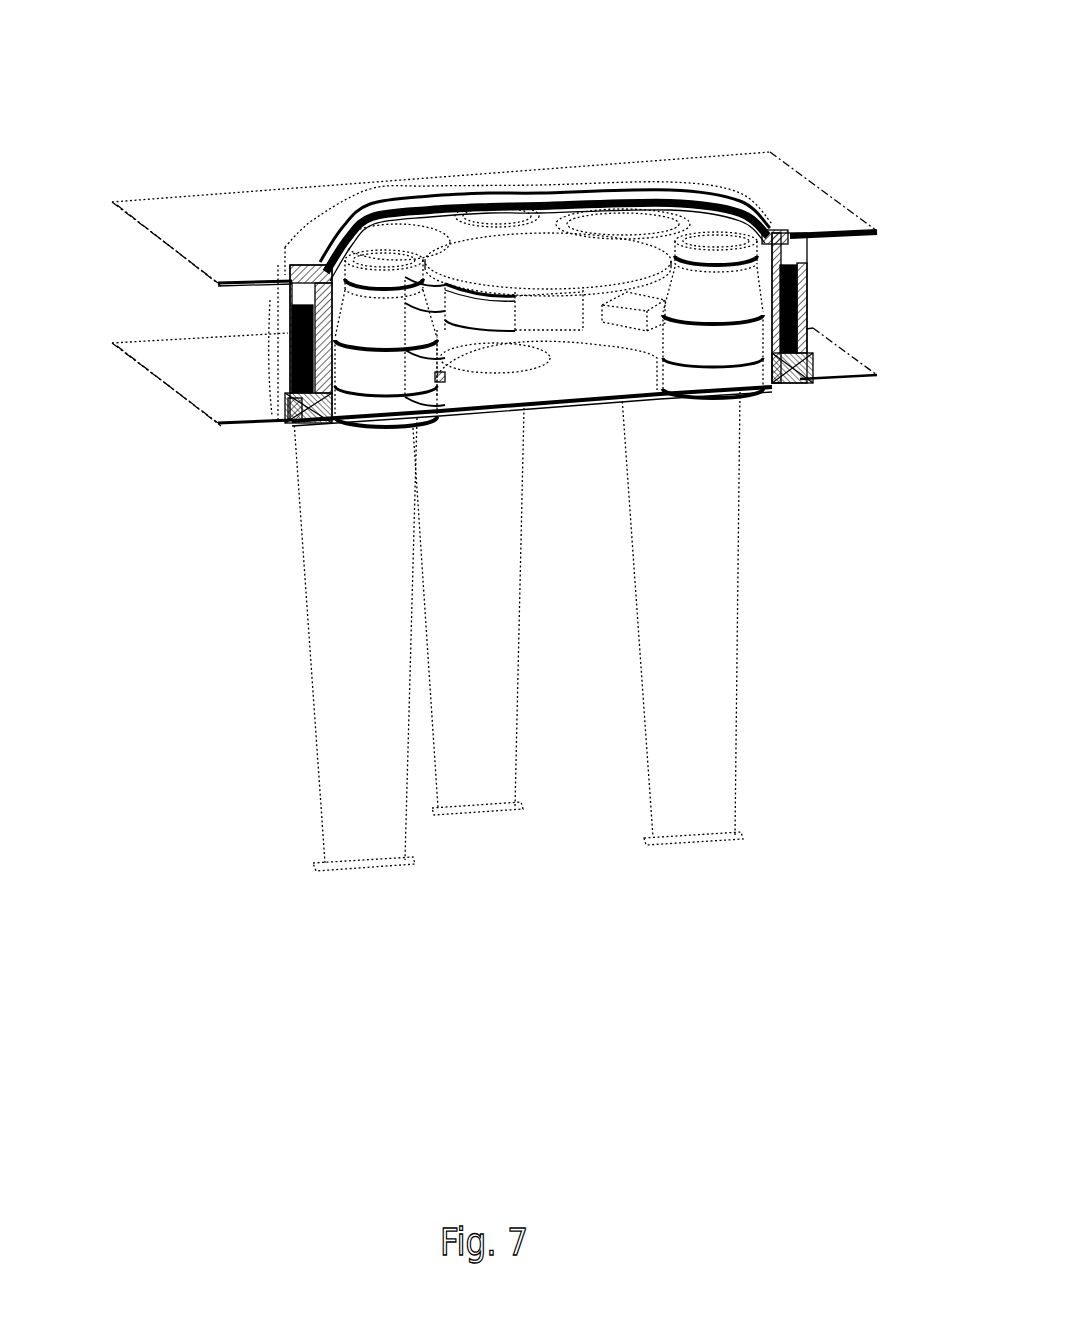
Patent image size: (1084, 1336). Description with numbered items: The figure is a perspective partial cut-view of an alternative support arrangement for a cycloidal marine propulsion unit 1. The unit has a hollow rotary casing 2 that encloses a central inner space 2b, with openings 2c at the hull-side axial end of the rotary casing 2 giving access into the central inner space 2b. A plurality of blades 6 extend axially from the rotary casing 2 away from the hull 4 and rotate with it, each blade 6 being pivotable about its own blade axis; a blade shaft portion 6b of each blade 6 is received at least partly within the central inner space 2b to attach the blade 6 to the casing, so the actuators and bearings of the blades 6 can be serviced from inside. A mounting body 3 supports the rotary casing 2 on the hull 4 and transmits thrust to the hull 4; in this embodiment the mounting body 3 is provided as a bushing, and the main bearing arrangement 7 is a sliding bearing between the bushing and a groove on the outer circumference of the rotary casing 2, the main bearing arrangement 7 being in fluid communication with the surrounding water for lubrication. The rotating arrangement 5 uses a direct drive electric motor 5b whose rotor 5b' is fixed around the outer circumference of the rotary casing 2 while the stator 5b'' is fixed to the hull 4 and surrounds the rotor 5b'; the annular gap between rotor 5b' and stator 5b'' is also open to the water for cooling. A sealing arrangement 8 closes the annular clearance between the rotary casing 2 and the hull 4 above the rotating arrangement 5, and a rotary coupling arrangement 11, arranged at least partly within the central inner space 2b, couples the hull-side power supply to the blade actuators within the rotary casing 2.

The cycloidal marine propulsion unit 1 is at (835, 918).
The rotary casing 2 is at (459, 315).
The central inner space 2b is at (612, 370).
The opening 2c is at (388, 242).
The mounting body 3 is at (797, 382).
The hull 4 is at (178, 388).
The rotating arrangement 5 is at (232, 344).
The direct drive electric motor 5b is at (302, 349).
The rotor 5b' is at (853, 290).
The stator 5b'' is at (861, 330).
The blades 6 is at (382, 832).
The blade shaft portion 6b is at (403, 334).
The main bearing arrangement 7 is at (310, 408).
The sealing arrangement 8 is at (767, 237).
The rotary coupling arrangement 11 is at (570, 302).